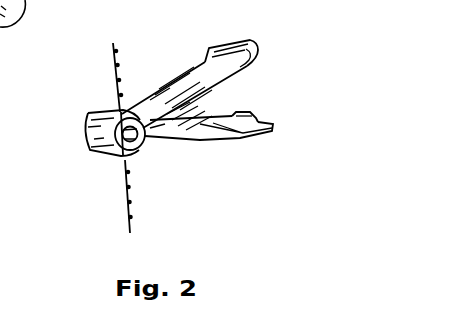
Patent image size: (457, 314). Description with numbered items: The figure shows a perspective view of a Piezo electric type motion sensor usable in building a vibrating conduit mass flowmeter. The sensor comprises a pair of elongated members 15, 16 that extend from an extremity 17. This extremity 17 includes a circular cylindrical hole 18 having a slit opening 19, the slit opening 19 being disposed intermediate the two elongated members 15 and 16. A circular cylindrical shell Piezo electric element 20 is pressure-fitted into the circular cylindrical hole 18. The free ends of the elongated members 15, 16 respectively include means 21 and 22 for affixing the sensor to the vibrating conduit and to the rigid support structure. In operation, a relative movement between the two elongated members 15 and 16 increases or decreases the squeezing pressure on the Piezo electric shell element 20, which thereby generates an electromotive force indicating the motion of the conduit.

The elongated member 15 is at (177, 82).
The elongated member 16 is at (208, 120).
The extremity 17 is at (87, 132).
The circular cylindrical hole 18 is at (97, 157).
The slit opening 19 is at (163, 137).
The circular cylindrical shell Piezo electric element 20 is at (115, 160).
The means for affixing 21 is at (241, 41).
The means for affixing 22 is at (257, 115).